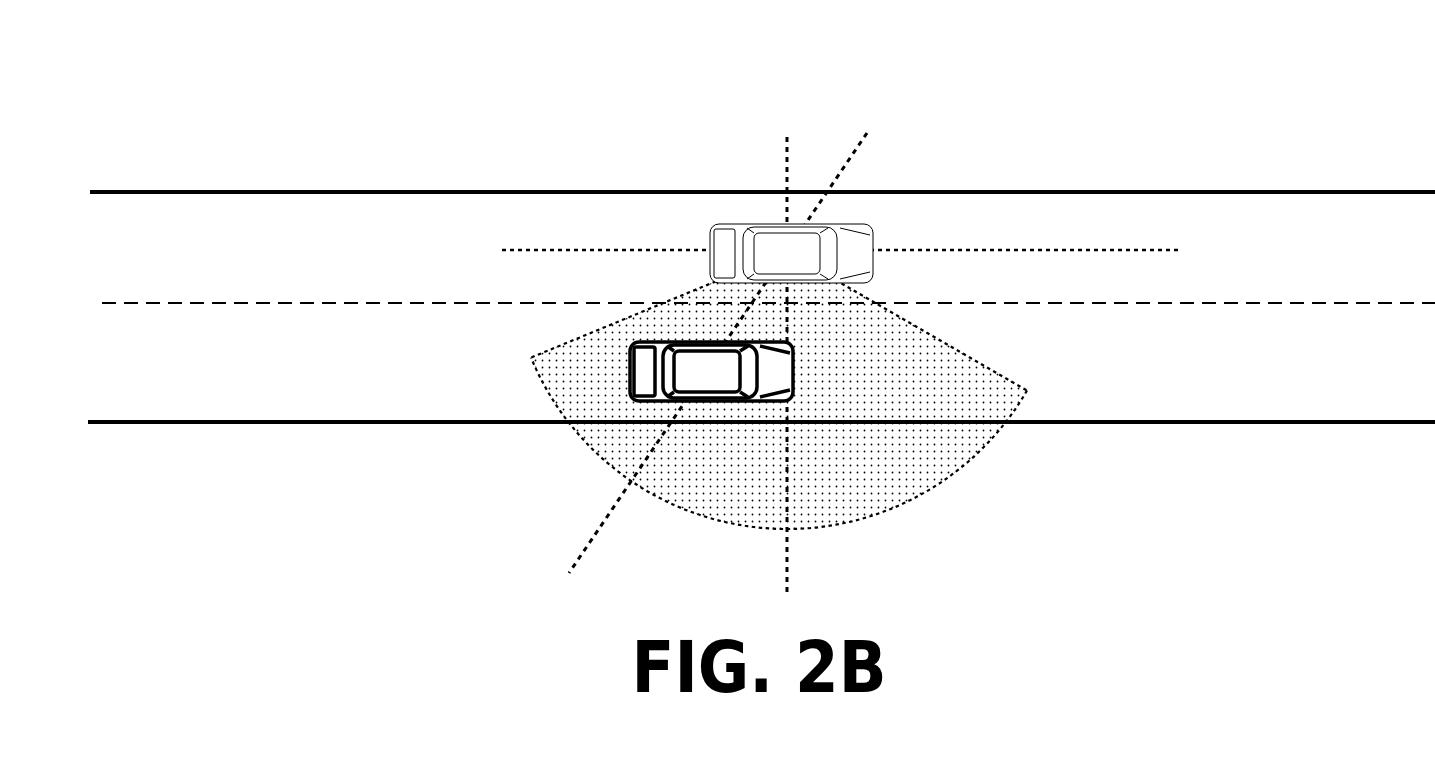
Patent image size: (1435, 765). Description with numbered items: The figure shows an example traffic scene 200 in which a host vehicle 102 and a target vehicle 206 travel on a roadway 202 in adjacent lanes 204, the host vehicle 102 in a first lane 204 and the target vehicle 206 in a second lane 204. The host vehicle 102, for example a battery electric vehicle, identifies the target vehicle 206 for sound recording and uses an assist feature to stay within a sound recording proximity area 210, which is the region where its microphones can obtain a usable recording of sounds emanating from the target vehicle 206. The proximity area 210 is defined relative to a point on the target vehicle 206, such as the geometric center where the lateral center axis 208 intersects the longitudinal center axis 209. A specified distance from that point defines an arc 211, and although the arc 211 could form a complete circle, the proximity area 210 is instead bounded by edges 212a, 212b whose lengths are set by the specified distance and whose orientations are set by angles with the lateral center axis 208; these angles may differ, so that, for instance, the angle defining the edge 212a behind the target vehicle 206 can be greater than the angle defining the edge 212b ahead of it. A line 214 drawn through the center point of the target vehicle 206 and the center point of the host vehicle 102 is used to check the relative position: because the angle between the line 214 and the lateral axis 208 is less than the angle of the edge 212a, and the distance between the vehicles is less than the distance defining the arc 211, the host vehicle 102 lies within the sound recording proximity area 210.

The traffic scene 200 is at (1286, 108).
The roadway 202 is at (381, 177).
The lane 204 is at (1392, 265).
The target vehicle 206 is at (768, 265).
The lateral center axis 208 is at (775, 175).
The longitudinal center axis 209 is at (1189, 243).
The sound recording proximity area 210 is at (672, 479).
The arc 211 is at (947, 497).
The edge 212a is at (548, 337).
The edge 212b is at (1020, 372).
The line 214 is at (870, 156).
The host vehicle 102 is at (687, 385).